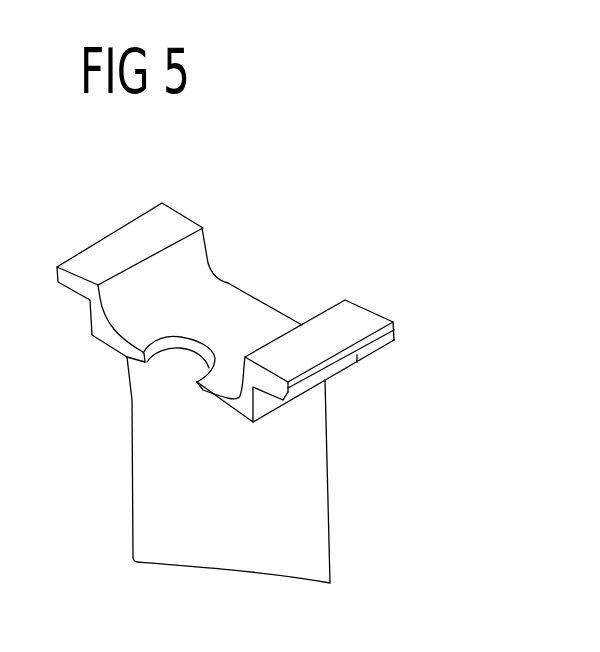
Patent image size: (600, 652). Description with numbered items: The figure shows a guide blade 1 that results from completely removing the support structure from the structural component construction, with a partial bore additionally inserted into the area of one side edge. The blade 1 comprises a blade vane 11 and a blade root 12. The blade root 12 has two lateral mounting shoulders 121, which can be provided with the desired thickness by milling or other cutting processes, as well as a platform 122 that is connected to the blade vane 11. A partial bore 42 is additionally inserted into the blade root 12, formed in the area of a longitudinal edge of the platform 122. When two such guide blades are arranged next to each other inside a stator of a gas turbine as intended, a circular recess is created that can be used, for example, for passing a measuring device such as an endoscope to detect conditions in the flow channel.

The blade 1 is at (112, 469).
The blade vane 11 is at (307, 468).
The blade root 12 is at (373, 350).
The partial bore 42 is at (180, 353).
The mounting shoulders 121 is at (120, 243).
The platform 122 is at (245, 308).